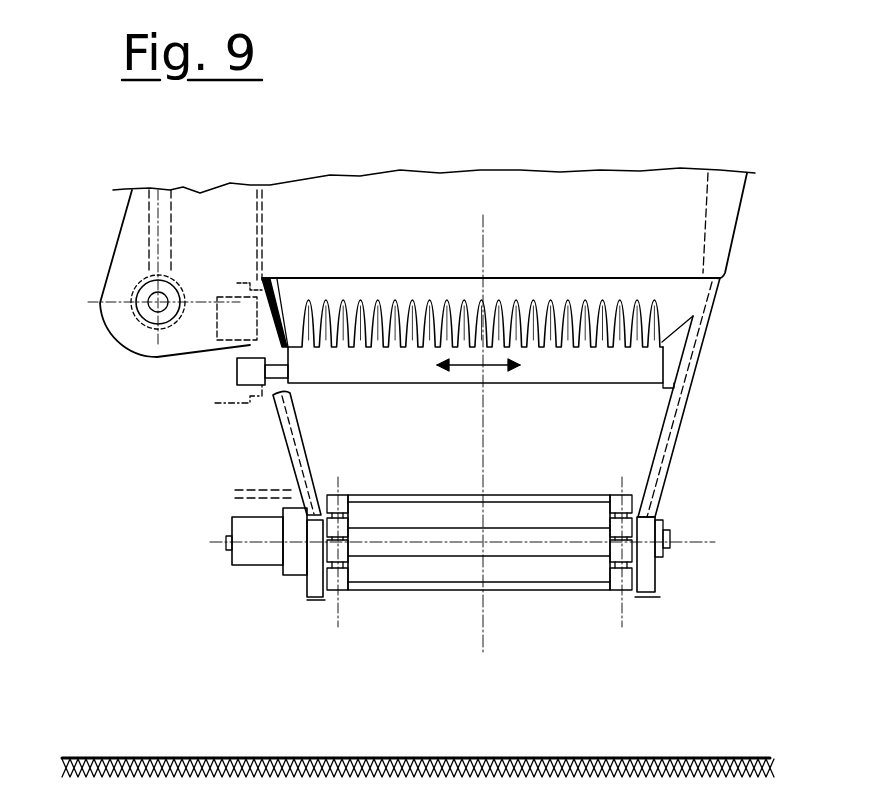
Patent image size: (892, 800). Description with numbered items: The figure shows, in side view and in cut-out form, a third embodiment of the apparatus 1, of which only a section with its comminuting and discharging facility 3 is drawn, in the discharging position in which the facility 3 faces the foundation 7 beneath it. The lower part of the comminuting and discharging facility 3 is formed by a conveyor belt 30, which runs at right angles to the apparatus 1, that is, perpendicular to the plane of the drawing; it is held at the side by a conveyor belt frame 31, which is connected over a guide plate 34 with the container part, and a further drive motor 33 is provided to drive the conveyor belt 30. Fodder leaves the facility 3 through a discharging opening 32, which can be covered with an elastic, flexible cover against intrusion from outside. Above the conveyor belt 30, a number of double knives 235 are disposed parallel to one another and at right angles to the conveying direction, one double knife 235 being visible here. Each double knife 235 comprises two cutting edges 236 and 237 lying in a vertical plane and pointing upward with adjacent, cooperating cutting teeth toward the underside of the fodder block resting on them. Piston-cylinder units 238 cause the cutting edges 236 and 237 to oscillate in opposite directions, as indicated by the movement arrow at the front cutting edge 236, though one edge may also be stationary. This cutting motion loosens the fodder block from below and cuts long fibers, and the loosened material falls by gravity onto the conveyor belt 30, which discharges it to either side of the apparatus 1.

The apparatus 1 is at (101, 196).
The comminuting and discharging facility 3 is at (274, 432).
The foundation 7 is at (396, 758).
The conveyor belt 30 is at (440, 494).
The conveyor belt frame 31 is at (300, 588).
The discharging opening 32 is at (538, 435).
The drive motor 33 is at (255, 555).
The guide plate 34 is at (662, 418).
The double knife 235 is at (393, 300).
The cutting edge 236 is at (362, 368).
The cutting edge 237 is at (280, 347).
The piston-cylinder unit 238 is at (238, 362).